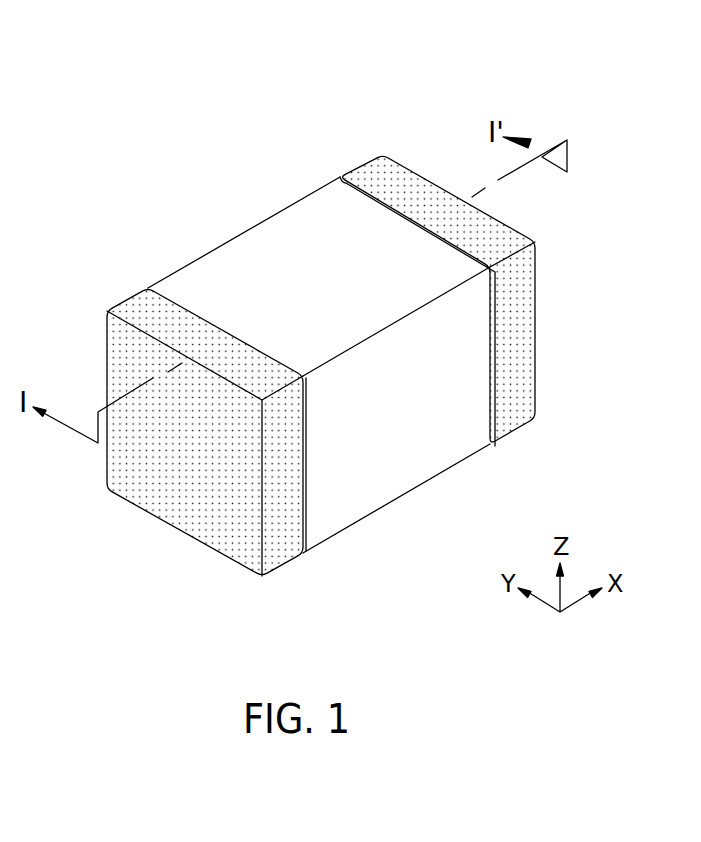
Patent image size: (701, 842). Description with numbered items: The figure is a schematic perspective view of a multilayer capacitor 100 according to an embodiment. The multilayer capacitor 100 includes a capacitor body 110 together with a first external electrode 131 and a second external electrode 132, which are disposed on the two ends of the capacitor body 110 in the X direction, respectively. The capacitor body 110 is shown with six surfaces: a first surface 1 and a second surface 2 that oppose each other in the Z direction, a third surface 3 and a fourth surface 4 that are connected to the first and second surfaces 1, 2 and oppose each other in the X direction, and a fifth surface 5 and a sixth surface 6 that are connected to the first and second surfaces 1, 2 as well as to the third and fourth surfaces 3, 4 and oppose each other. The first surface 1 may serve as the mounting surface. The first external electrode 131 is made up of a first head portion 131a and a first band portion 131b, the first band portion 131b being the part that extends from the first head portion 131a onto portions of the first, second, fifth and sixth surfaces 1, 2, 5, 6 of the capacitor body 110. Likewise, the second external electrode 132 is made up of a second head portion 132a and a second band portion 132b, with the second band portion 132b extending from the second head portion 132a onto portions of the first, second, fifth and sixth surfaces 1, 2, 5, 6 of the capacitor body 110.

The multilayer capacitor 100 is at (157, 47).
The capacitor body 110 is at (257, 265).
The first external electrode 131 is at (166, 393).
The first head portion 131a is at (123, 354).
The first band portion 131b is at (135, 312).
The second external electrode 132 is at (426, 244).
The second head portion 132a is at (413, 172).
The second band portion 132b is at (410, 272).
The first surface 1 is at (351, 484).
The second surface 2 is at (318, 250).
The third surface 3 is at (142, 469).
The fourth surface 4 is at (510, 322).
The fifth surface 5 is at (423, 443).
The sixth surface 6 is at (233, 299).